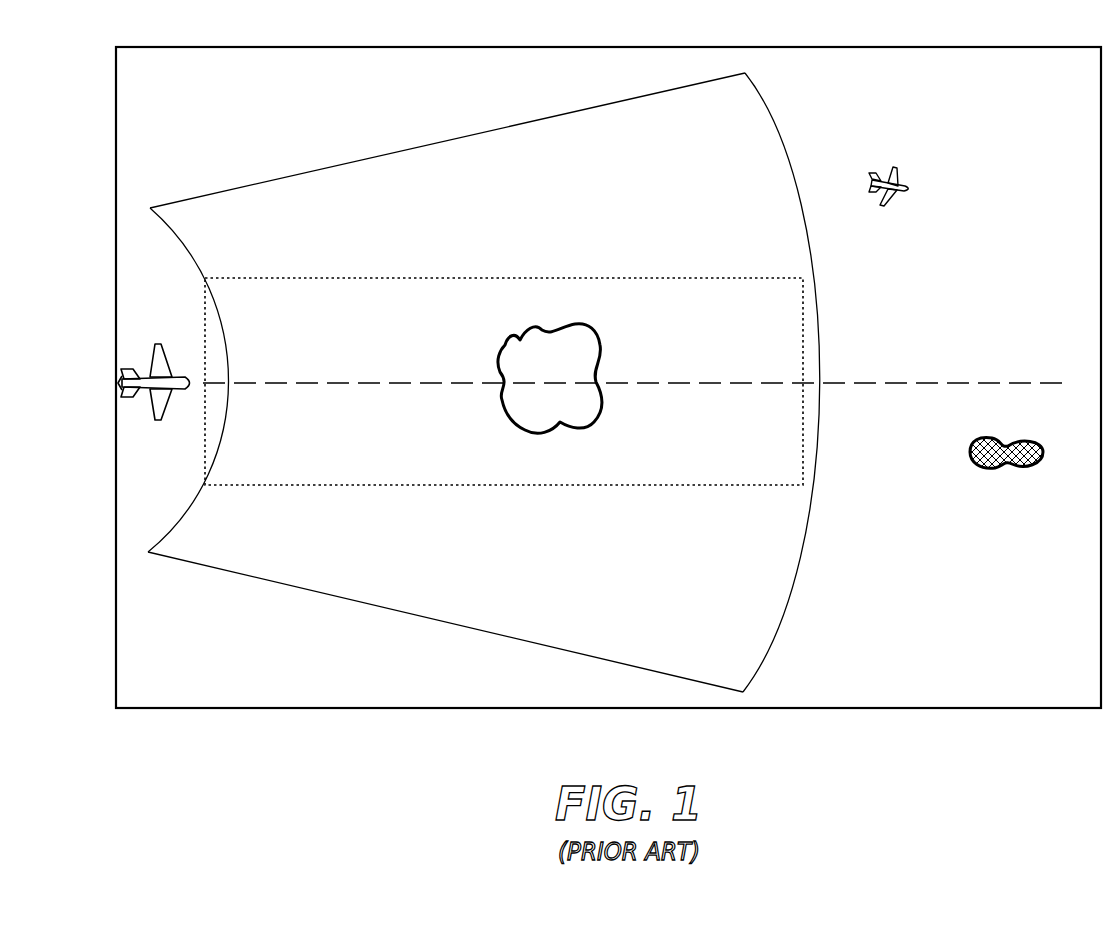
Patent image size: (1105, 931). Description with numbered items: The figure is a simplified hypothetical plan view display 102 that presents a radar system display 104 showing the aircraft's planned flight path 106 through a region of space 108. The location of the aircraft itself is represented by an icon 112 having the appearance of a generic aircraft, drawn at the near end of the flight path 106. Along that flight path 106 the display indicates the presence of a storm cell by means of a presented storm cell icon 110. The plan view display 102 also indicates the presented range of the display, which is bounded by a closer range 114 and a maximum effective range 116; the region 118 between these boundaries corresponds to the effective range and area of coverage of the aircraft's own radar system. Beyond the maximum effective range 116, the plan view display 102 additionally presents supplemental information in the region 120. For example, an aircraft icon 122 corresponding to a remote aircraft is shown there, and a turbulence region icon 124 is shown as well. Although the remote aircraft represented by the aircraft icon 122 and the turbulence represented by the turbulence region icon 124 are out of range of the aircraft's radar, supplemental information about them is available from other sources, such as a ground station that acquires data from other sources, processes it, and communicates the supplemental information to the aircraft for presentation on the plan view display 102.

The plan view display 102 is at (981, 752).
The radar system display 104 is at (175, 708).
The planned flight path 106 is at (278, 384).
The region of space 108 is at (590, 486).
The storm cell icon 110 is at (620, 422).
The aircraft icon 112 is at (133, 447).
The closer range 114 is at (190, 238).
The maximum effective range 116 is at (783, 645).
The region 118 is at (257, 604).
The region 120 is at (992, 616).
The aircraft icon 122 is at (930, 185).
The turbulence region icon 124 is at (993, 465).